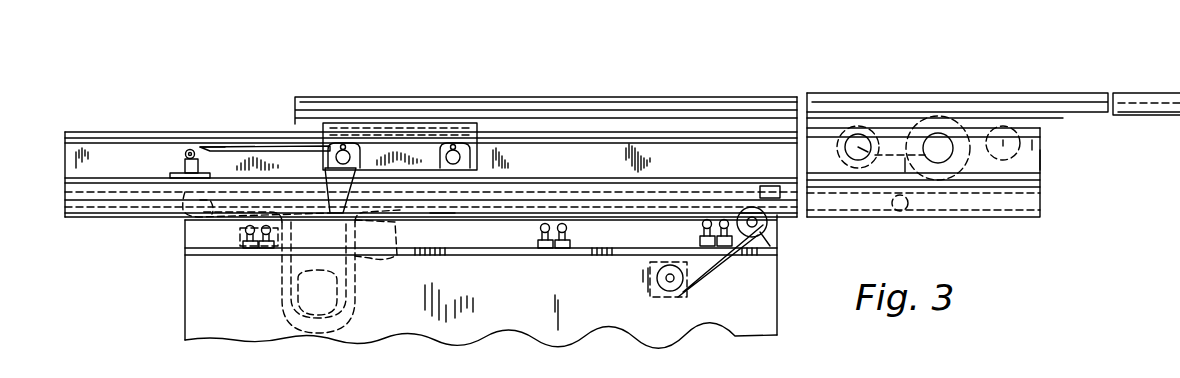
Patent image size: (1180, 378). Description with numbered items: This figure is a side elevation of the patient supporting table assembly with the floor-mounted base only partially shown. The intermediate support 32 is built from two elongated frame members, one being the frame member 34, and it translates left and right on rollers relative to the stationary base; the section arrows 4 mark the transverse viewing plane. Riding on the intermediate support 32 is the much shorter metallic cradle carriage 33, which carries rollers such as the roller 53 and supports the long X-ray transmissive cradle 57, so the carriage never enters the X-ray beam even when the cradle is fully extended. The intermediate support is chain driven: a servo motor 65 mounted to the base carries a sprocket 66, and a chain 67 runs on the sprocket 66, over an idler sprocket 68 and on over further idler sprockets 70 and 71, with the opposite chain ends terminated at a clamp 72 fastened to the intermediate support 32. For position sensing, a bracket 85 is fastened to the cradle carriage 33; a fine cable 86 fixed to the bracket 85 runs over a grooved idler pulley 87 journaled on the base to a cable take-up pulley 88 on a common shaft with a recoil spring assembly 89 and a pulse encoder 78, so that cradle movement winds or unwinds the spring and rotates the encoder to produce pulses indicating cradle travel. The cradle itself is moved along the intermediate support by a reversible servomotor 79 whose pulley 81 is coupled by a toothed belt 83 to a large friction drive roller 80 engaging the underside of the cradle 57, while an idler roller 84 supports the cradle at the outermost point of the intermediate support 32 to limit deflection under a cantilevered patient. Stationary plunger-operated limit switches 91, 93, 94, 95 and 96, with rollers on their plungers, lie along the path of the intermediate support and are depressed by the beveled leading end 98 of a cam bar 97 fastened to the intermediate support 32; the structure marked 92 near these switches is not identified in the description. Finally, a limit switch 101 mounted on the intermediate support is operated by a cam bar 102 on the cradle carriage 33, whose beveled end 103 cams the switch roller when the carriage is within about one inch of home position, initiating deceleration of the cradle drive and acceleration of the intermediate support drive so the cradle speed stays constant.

The section line 4- 4 is at (141, 154).
The intermediate support 32 is at (979, 155).
The cradle carriage 33 is at (431, 157).
The elongated frame member 34 is at (1057, 159).
The roller 53 is at (346, 139).
The X-ray transmissive cradle 57 is at (1146, 80).
The servo motor 65 is at (300, 271).
The sprocket 66 is at (289, 278).
The chain 67 is at (374, 258).
The idler sprocket 68 is at (239, 269).
The idler sprocket 70 is at (212, 199).
The idler sprocket 71 is at (919, 221).
The clamp 72 is at (766, 172).
The pulse encoder 78 is at (615, 292).
The reversible servomotor 79 is at (922, 122).
The friction drive roller 80 is at (858, 115).
The pulley 81 is at (1003, 112).
The toothed belt 83 is at (938, 183).
The idler roller 84 is at (1058, 141).
The bracket 85 is at (400, 139).
The cable 86 is at (622, 258).
The grooved idler pulley 87 is at (782, 227).
The cable take-up pulley 88 is at (623, 301).
The recoil spring assembly 89 is at (677, 295).
The limit switch 91 is at (690, 233).
The lower housing 92 is at (506, 281).
The limit switch 93 is at (539, 257).
The limit switch 94 is at (576, 257).
The limit switch 95 is at (255, 269).
The limit switch 96 is at (233, 255).
The cam bar 97 is at (443, 252).
The leading end 98 is at (738, 181).
The limit switch 101 is at (155, 162).
The cam bar 102 is at (265, 113).
The beveled end 103 is at (206, 120).